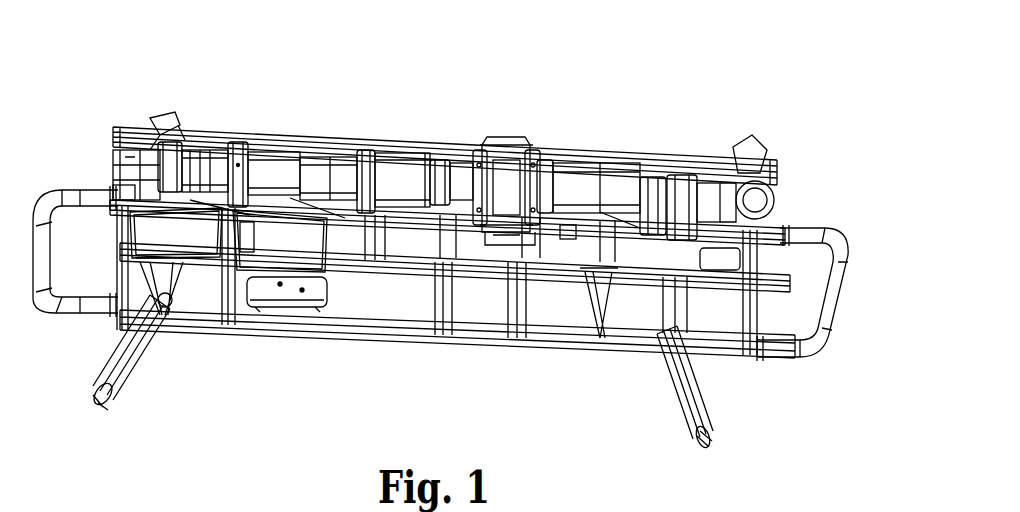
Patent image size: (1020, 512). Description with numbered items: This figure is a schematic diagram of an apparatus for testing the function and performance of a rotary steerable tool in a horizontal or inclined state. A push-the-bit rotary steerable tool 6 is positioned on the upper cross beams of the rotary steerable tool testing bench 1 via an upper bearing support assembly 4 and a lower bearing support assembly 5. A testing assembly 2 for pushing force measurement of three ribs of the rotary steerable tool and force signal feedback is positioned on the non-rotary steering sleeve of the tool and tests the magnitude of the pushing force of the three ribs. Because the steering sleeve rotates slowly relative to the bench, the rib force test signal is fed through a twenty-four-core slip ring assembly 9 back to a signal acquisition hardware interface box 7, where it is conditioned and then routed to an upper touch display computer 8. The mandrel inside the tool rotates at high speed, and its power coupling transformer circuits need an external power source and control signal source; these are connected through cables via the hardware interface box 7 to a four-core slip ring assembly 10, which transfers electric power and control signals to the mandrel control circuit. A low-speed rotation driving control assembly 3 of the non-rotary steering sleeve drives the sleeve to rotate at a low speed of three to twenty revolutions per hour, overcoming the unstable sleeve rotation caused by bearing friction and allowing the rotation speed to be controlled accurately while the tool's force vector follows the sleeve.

The rotary steerable tool testing bench 1 is at (402, 262).
The testing assembly for pushing force measurement of three ribs of the rotary steer 2 is at (507, 135).
The low-speed rotation driving control assembly of the non-rotary steering sleeve of 3 is at (362, 140).
The upper bearing support assembly 4 is at (165, 125).
The lower bearing support assembly 5 is at (687, 152).
The push-the-bit rotary steerable tool 6 is at (598, 148).
The signal acquisition hardware interface box 7 is at (268, 335).
The upper touch display computer 8 is at (182, 330).
The 24-core slip ring assembly 9 is at (407, 160).
The 4-core slip ring assembly 10 is at (239, 165).